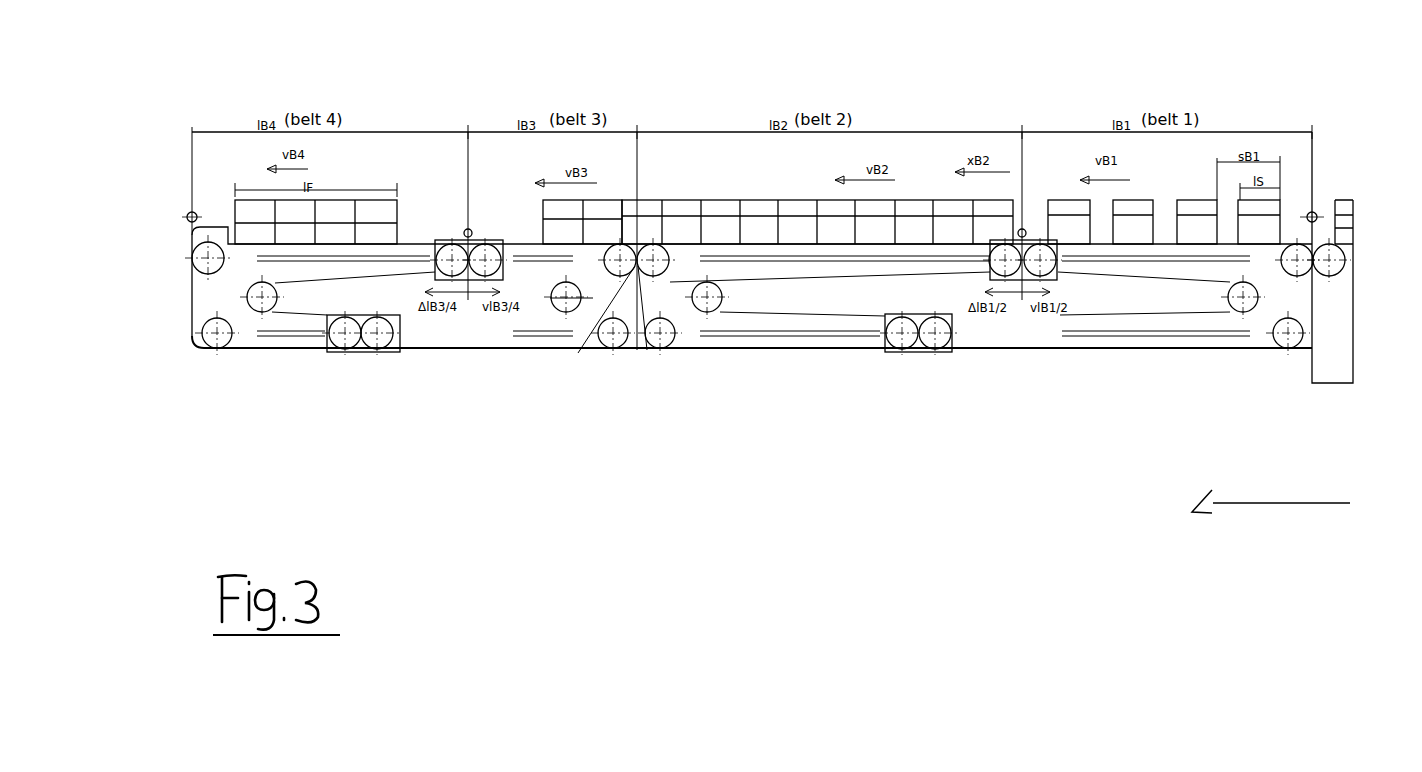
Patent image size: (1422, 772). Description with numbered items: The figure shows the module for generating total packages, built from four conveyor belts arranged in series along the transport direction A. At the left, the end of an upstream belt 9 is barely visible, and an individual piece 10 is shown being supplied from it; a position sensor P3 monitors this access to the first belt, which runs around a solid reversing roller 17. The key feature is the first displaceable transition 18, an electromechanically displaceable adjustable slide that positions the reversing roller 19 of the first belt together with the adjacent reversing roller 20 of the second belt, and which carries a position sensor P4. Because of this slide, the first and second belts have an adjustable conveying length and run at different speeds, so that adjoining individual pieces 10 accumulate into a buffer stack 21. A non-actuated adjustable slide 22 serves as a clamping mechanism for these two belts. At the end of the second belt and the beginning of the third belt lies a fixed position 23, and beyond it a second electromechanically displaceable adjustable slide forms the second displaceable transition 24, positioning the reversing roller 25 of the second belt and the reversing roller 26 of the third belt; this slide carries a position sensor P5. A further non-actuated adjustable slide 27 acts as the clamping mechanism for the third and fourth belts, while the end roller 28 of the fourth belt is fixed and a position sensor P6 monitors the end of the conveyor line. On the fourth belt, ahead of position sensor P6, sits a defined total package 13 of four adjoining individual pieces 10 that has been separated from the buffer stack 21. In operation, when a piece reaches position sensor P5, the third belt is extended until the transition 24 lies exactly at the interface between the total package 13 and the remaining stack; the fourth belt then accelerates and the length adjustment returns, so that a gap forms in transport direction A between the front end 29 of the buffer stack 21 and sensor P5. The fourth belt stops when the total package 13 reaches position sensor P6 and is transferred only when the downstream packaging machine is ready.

The belt 9 is at (1332, 275).
The individual piece 10 is at (1340, 206).
The defined total package 13 is at (358, 186).
The solid reversing roller 17 is at (1297, 265).
The first displaceable transition 18 is at (1022, 238).
The reversing roller 19 is at (1030, 240).
The roller 20 is at (992, 247).
The buffer stack 21 is at (763, 161).
The non-actuated adjustable slide 22 is at (918, 345).
The fixed position 23 is at (637, 263).
The second displaceable transition 24 is at (470, 243).
The reversing roller 25 is at (495, 265).
The reversing roller 26 is at (443, 265).
The non-actuated adjustable slide 27 is at (360, 350).
The end roller 28 is at (210, 258).
The front end 29 is at (543, 212).
The position sensor P3 is at (1312, 212).
The position sensor P4 is at (1020, 230).
The position sensor P5 is at (468, 229).
The position sensor P6 is at (192, 213).
The transport direction A is at (1271, 490).